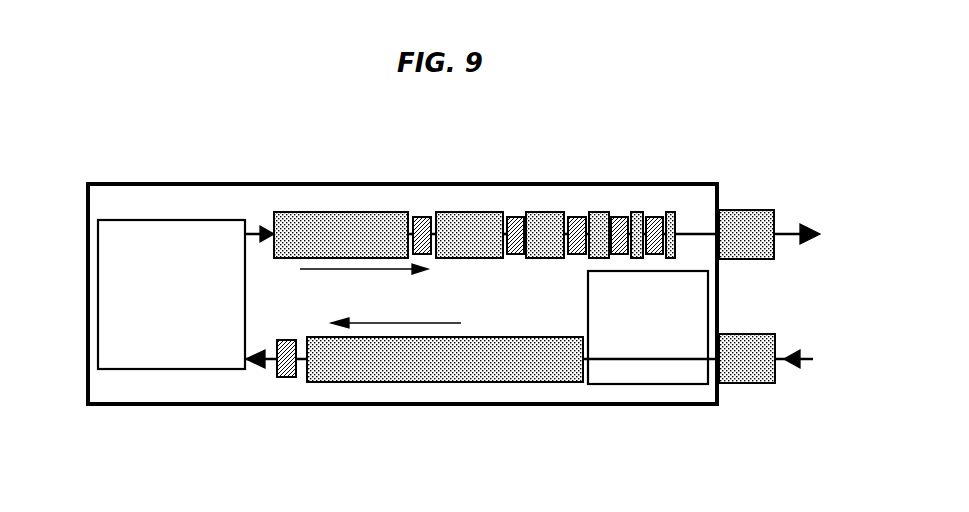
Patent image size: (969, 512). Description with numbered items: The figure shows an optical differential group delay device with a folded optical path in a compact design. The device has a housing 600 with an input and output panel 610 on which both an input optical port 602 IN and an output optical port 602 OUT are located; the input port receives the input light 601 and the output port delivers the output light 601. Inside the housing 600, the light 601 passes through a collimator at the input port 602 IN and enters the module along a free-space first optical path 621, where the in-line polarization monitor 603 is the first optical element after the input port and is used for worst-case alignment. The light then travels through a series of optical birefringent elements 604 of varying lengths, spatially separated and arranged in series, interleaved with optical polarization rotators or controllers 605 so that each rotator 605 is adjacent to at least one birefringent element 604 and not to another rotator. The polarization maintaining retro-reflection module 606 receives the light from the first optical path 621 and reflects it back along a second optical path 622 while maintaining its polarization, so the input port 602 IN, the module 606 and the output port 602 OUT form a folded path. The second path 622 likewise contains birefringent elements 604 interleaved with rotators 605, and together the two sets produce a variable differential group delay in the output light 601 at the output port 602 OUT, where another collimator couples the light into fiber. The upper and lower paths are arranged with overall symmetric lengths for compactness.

The device housing 600 is at (235, 182).
The light 601 is at (797, 228).
The optical port 602 is at (749, 218).
The in-line polarization monitor 603 is at (654, 368).
The optical birefringent element 604 is at (348, 216).
The optical polarization rotator or polarization controller 605 is at (422, 216).
The polarization maintaining retro-reflection module 606 is at (103, 250).
The input and output panel 610 is at (720, 392).
The first optical path 621 is at (435, 322).
The second optical path 622 is at (330, 272).